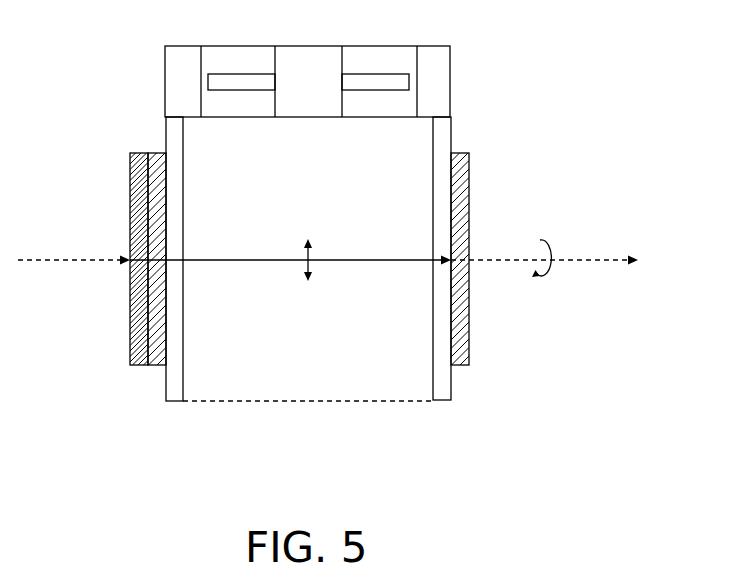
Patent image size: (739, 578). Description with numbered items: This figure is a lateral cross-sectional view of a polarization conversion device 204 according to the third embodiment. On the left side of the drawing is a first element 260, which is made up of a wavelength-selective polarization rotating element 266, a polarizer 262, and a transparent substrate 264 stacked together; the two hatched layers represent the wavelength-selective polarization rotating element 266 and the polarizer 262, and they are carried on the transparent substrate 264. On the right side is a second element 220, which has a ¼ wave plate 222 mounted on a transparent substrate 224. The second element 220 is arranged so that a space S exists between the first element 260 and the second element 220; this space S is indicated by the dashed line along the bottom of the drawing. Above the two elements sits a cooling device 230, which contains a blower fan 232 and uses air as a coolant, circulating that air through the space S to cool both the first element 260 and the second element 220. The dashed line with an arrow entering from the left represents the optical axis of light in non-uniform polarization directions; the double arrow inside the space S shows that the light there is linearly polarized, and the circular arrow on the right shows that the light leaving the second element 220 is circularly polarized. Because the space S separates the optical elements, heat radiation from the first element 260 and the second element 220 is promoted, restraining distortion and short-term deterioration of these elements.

The polarization conversion device 204 is at (538, 30).
The cooling device 230 is at (452, 84).
The blower fan 232 is at (380, 74).
The second element 220 is at (551, 328).
The ¼ wave plate 222 is at (470, 347).
The transparent substrate 224 is at (452, 378).
The first element 260 is at (192, 461).
The polarizer 262 is at (158, 367).
The transparent substrate 264 is at (177, 403).
The wavelength-selective polarization rotating element 266 is at (137, 367).
The space S is at (310, 402).